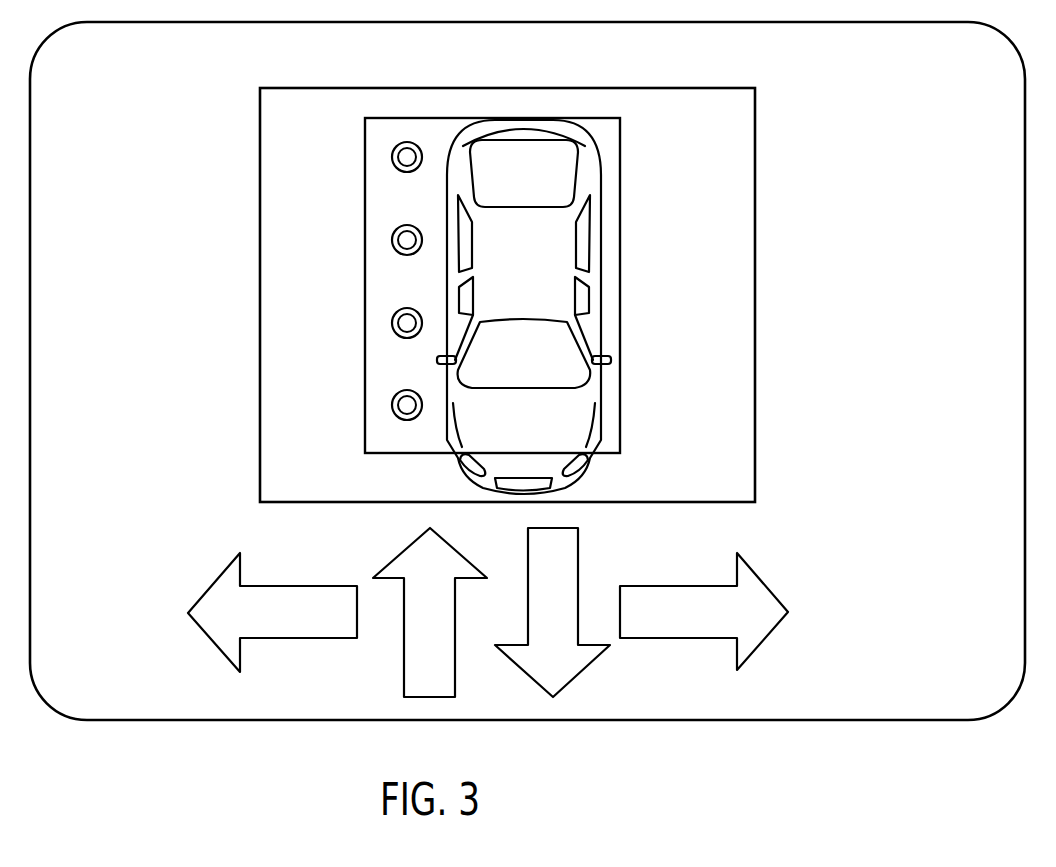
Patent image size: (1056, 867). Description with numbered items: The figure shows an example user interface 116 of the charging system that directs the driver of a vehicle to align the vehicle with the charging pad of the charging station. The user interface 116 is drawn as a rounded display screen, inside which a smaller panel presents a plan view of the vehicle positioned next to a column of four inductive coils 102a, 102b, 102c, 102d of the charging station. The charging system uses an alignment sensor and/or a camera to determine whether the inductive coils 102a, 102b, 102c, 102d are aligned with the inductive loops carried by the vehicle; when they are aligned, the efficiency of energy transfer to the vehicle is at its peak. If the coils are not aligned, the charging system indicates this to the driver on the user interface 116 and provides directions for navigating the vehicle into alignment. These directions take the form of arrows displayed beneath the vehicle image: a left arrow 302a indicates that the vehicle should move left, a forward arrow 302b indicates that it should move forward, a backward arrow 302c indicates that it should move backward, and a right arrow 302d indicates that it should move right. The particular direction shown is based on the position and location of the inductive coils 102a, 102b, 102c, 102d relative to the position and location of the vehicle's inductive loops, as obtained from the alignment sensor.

The user interface 116 is at (974, 703).
The inductive coil 102a is at (393, 152).
The inductive coil 102b is at (393, 235).
The inductive coil 102c is at (393, 318).
The inductive coil 102d is at (393, 400).
The left arrow 302a is at (293, 639).
The forward arrow 302b is at (428, 698).
The backward arrow 302c is at (561, 690).
The right arrow 302d is at (680, 639).